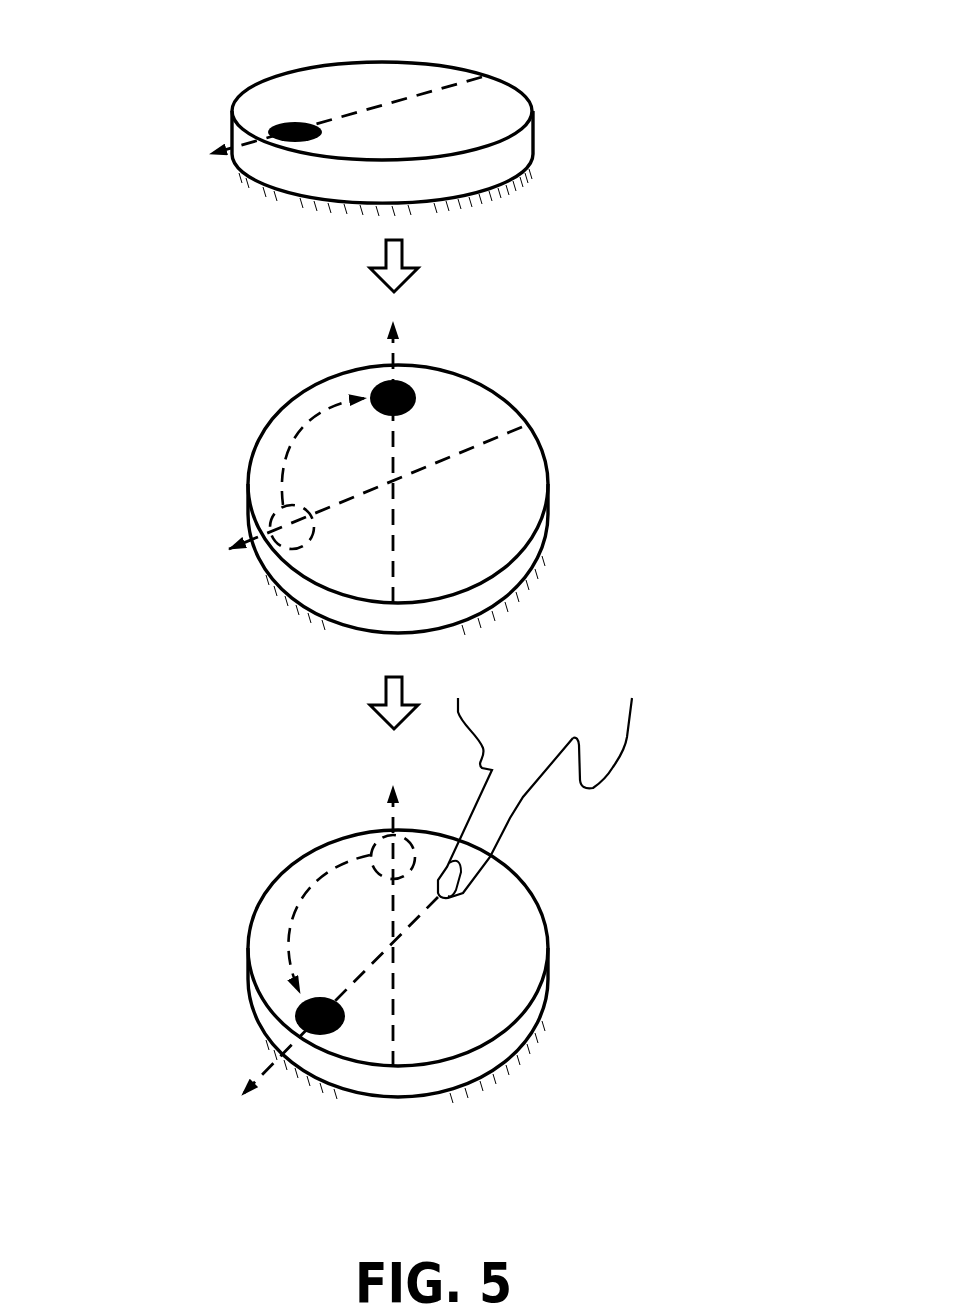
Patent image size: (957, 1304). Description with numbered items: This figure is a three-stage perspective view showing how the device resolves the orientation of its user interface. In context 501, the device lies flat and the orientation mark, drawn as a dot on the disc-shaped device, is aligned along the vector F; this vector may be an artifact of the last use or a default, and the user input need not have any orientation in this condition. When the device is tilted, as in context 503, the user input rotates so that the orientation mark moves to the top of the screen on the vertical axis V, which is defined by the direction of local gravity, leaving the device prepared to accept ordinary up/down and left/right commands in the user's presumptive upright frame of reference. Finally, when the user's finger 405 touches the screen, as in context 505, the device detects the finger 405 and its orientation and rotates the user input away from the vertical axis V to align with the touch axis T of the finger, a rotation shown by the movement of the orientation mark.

The finger 405 is at (535, 798).
The context 501 is at (464, 108).
The context 503 is at (493, 468).
The context 505 is at (461, 900).